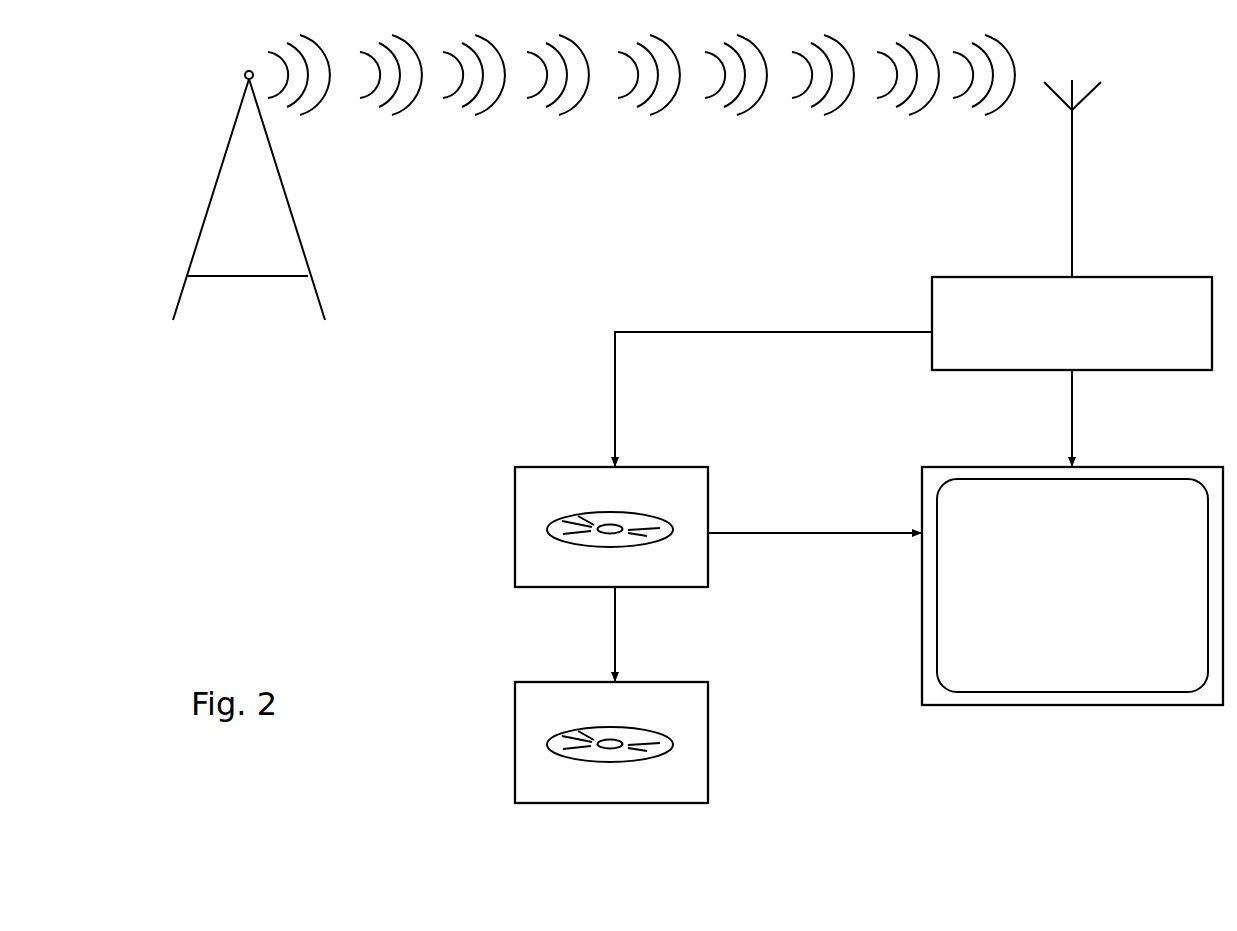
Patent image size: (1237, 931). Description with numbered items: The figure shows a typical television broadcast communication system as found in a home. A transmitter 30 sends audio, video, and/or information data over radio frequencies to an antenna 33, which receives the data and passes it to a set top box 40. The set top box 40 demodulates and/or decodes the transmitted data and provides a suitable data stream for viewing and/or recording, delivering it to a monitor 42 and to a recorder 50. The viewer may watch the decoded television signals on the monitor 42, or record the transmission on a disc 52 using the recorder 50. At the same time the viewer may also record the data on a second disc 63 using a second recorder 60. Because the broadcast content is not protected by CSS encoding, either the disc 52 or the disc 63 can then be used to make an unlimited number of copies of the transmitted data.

The transmitter 30 is at (268, 277).
The antenna 33 is at (1073, 178).
The set top box 40 is at (950, 371).
The monitor 42 is at (967, 706).
The recorder 50 is at (611, 551).
The disc 52 is at (630, 548).
The recorder 60 is at (611, 767).
The disc 63 is at (648, 760).